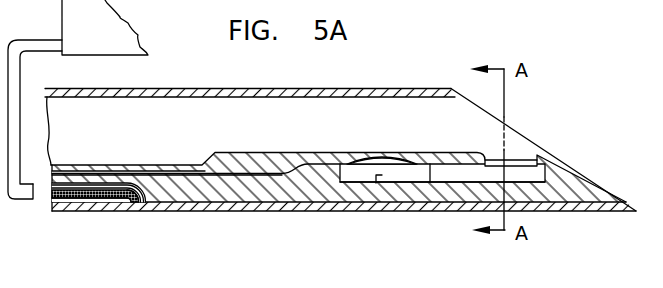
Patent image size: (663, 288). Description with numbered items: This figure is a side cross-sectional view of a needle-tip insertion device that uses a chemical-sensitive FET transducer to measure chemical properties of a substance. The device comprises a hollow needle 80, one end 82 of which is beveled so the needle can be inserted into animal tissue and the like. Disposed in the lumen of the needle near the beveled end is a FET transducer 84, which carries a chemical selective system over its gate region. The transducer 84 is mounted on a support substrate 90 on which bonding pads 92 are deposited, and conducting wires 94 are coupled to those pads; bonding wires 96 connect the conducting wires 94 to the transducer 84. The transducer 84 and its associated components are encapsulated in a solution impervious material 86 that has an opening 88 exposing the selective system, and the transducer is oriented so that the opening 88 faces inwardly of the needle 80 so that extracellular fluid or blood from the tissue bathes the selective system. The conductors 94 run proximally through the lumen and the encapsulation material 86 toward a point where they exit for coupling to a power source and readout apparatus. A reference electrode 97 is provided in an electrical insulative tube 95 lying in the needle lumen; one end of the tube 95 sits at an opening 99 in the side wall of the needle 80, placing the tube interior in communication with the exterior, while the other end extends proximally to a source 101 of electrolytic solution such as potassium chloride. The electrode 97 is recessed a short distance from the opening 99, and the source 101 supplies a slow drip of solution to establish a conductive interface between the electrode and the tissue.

The hollow needle 80 is at (207, 208).
The beveled end 82 is at (528, 113).
The FET transducer 84 is at (428, 200).
The solution impervious material 86 is at (445, 157).
The opening 88 is at (513, 157).
The support substrate 90 is at (383, 183).
The bonding pads 92 is at (345, 183).
The conducting wires 94 is at (267, 182).
The electrical insulative tube 95 is at (141, 204).
The bonding wires 96 is at (375, 157).
The reference electrode 97 is at (102, 192).
The opening 99 is at (135, 204).
The source of electrolytic solution 101 is at (113, 40).